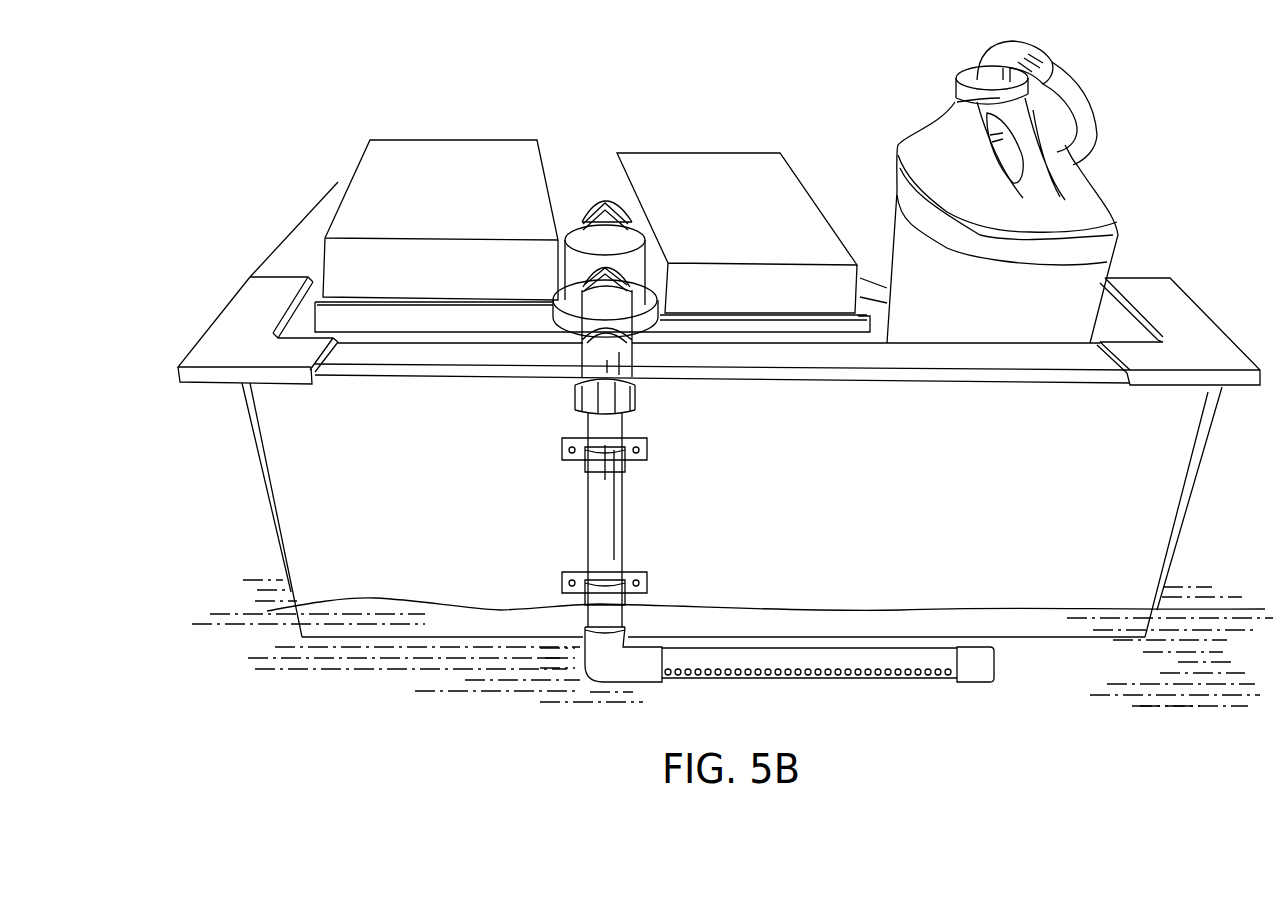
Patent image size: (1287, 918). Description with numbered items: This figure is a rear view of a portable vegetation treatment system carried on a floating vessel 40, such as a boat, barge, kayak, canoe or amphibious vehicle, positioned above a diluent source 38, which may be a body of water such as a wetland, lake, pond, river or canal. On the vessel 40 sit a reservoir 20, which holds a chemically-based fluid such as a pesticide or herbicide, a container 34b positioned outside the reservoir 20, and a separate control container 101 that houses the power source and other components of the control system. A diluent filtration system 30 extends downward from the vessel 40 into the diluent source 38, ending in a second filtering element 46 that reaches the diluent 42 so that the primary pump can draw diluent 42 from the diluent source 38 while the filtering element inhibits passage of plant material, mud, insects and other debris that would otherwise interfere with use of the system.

The control container 101 is at (441, 167).
The container 34b is at (693, 168).
The reservoir 20 is at (1080, 207).
The vessel 40 is at (270, 522).
The diluent 42 is at (1222, 592).
The diluent source 38 is at (1155, 707).
The diluent filtration system 30 is at (588, 684).
The second filtering element 46 is at (915, 680).